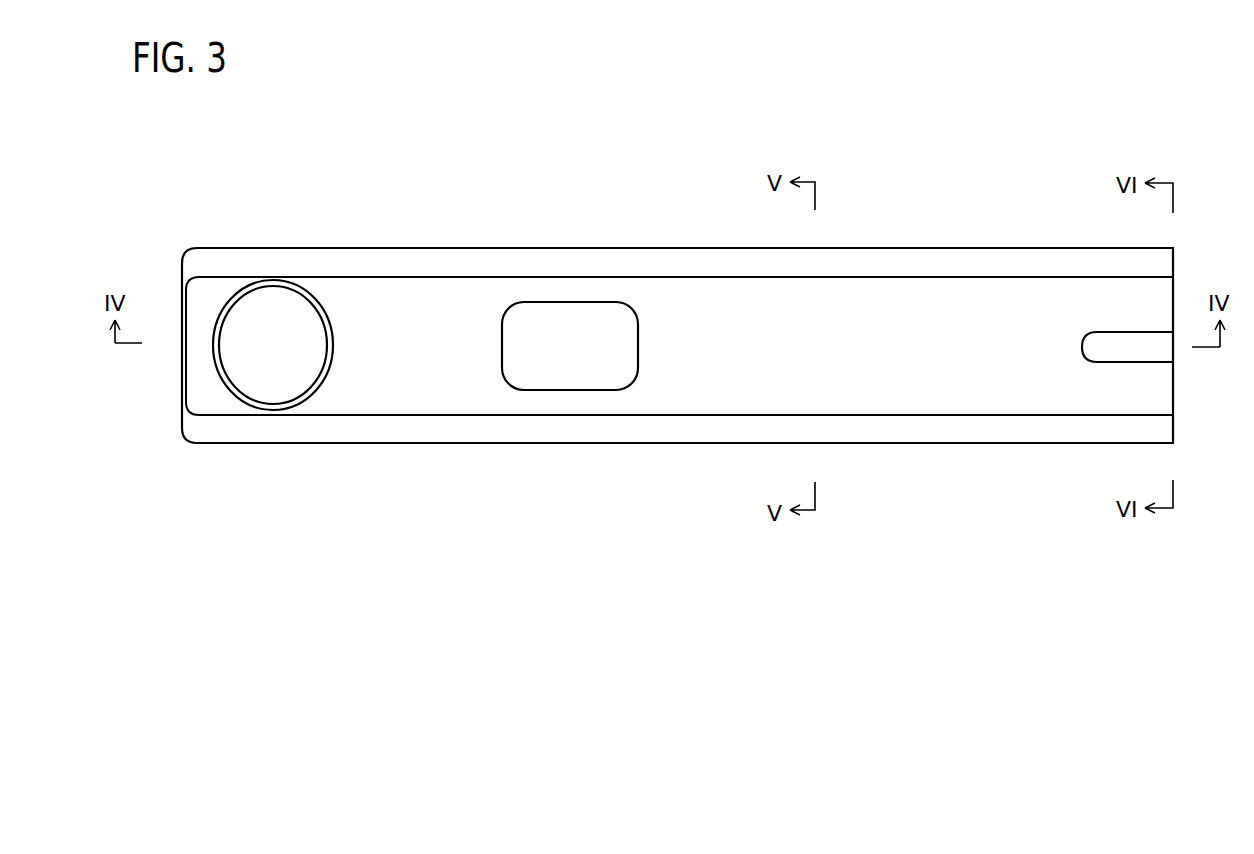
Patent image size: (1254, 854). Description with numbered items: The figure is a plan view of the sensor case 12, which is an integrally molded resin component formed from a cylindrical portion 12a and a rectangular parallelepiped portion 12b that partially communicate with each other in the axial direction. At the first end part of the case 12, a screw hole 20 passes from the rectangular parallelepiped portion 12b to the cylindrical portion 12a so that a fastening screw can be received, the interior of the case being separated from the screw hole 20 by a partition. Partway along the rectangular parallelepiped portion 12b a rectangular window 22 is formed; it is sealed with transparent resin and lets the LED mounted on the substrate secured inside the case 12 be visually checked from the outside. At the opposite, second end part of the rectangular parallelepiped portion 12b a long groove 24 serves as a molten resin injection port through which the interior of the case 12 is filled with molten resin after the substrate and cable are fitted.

The case 12 is at (894, 247).
The cylindrical portion 12a is at (280, 444).
The rectangular parallelepiped portion 12b is at (364, 310).
The screw hole 20 is at (245, 301).
The rectangular window 22 is at (548, 310).
The long groove 24 is at (1122, 333).